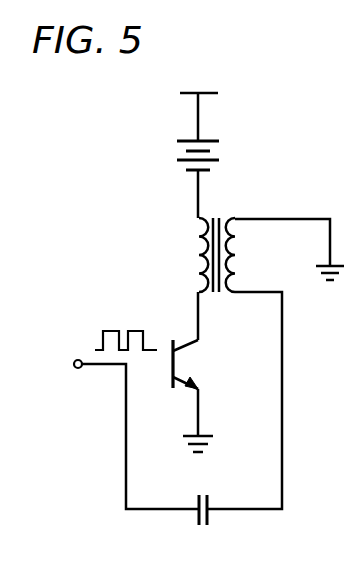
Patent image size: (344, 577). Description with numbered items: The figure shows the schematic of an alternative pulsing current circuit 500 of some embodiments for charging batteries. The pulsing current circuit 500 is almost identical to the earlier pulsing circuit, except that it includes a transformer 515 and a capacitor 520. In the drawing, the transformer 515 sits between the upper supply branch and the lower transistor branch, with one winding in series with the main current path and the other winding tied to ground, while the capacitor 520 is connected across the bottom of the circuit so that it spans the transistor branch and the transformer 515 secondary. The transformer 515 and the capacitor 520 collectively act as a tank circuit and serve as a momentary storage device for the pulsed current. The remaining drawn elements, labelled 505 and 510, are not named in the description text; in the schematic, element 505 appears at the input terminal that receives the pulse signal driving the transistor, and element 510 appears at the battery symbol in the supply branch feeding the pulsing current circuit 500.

The pulsing current circuit 500 is at (118, 147).
The input terminal 505 is at (75, 368).
The battery / voltage source 510 is at (222, 150).
The transformer 515 is at (203, 243).
The capacitor 520 is at (193, 518).